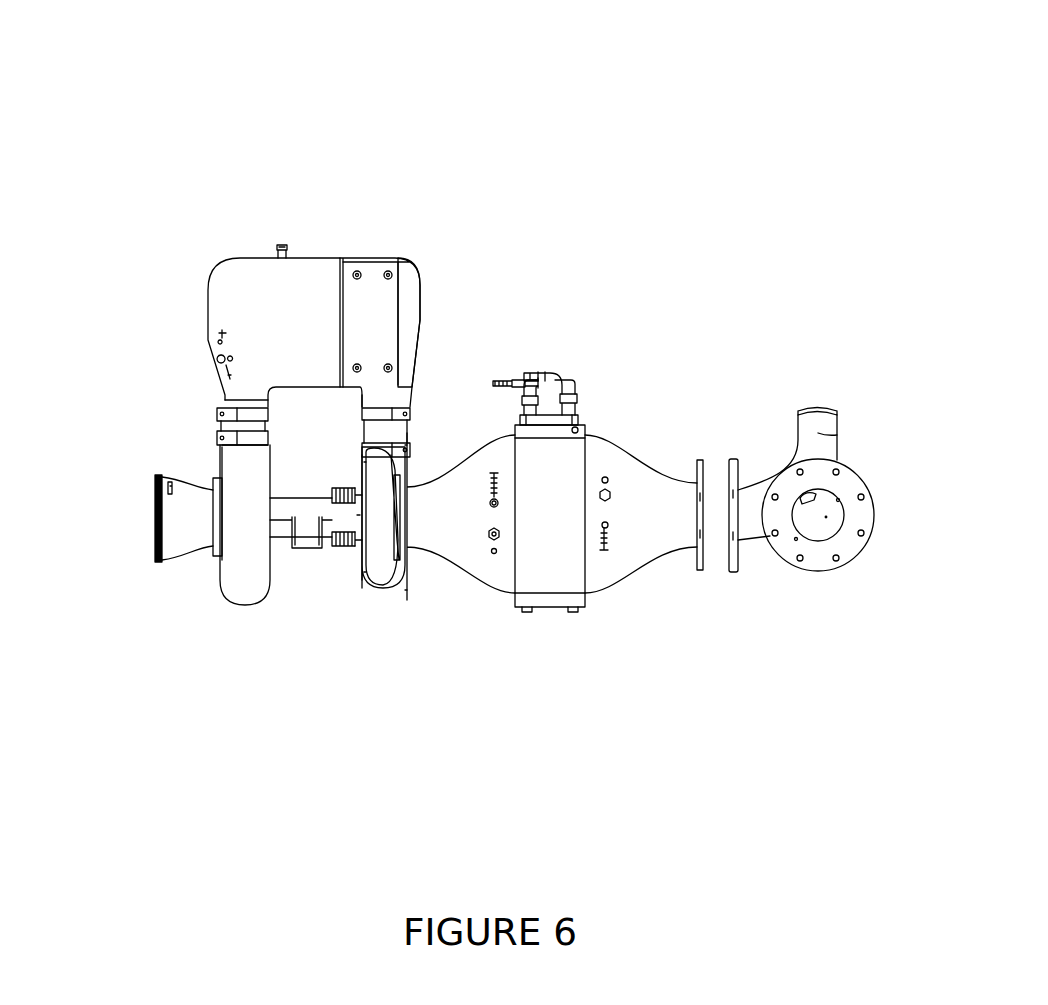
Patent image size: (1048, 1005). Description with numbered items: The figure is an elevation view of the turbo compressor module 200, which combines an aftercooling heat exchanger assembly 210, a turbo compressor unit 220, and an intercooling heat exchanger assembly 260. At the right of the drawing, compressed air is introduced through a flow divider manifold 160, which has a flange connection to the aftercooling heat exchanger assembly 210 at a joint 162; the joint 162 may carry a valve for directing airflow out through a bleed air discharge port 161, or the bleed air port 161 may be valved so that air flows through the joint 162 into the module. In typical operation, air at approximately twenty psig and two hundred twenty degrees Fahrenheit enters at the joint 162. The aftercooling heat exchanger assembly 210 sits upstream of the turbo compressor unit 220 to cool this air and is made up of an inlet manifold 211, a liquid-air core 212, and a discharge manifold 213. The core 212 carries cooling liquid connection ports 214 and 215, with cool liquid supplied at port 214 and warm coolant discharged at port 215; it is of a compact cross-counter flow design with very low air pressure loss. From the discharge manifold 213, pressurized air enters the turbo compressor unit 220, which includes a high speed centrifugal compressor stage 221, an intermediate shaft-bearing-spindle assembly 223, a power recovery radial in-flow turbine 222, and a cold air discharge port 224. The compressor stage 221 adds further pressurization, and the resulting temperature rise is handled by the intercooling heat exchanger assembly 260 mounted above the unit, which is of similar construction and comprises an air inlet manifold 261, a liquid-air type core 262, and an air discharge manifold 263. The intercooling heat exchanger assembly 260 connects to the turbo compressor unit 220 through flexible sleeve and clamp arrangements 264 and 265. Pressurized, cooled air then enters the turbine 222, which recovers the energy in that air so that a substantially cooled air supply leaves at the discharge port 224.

The turbo compressor module 200 is at (558, 128).
The intercooling heat exchanger assembly 260 is at (235, 202).
The air inlet manifold 261 is at (412, 288).
The liquid-air type core 262 is at (371, 271).
The air discharge manifold 263 is at (255, 310).
The flexible sleeve and clamp arrangement 264 is at (408, 430).
The flexible sleeve and clamp arrangement 265 is at (217, 423).
The turbo compressor unit 220 is at (277, 705).
The high speed centrifugal compressor stage 221 is at (382, 594).
The power recovery radial in-flow turbine 222 is at (248, 608).
The intermediate shaft-bearing-spindle assembly 223 is at (307, 513).
The cold air discharge port 224 is at (153, 520).
The aftercooling heat exchanger assembly 210 is at (578, 720).
The inlet manifold 211 is at (637, 582).
The liquid-air core 212 is at (548, 575).
The discharge manifold 213 is at (448, 565).
The cooling liquid connection port 214 is at (520, 366).
The cooling liquid connection port 215 is at (568, 368).
The flow divider manifold 160 is at (902, 462).
The bleed air discharge port 161 is at (837, 537).
The joint 162 is at (735, 528).